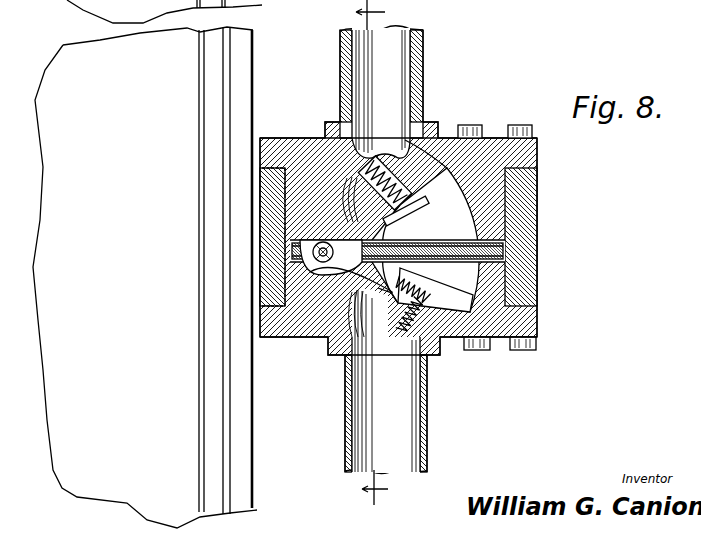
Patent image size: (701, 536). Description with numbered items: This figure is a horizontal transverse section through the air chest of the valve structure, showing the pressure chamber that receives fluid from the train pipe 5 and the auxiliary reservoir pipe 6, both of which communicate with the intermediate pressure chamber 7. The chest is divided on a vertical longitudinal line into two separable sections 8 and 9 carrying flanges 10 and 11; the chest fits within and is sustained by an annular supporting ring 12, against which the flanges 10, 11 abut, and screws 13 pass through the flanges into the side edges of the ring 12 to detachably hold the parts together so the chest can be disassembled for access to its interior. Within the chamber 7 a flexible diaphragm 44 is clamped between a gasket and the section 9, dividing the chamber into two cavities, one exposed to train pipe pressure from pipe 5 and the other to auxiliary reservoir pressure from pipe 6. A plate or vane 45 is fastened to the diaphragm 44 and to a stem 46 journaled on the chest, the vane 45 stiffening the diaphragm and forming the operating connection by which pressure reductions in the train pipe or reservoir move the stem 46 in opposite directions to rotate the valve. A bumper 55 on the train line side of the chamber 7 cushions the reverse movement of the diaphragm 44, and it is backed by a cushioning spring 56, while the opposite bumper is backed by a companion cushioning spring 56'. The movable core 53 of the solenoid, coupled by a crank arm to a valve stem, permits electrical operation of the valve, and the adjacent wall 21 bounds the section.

The train pipe 5 is at (401, 74).
The auxiliary reservoir pipe 6 is at (427, 400).
The intermediate pressure chamber 7 is at (537, 203).
The chest section 8 is at (497, 323).
The chest section 9 is at (483, 153).
The flange 10 is at (537, 328).
The flange 11 is at (540, 153).
The annular supporting ring 12 is at (538, 238).
The screws 13 is at (530, 125).
The tank wall 21 is at (147, 264).
The flexible diaphragm 44 is at (453, 263).
The plate or vane 45 is at (407, 227).
The stem 46 is at (330, 273).
The movable core 53 is at (430, 180).
The bumper 55 is at (420, 250).
The cushioning spring 56 is at (358, 157).
The cushioning spring 56' is at (403, 340).